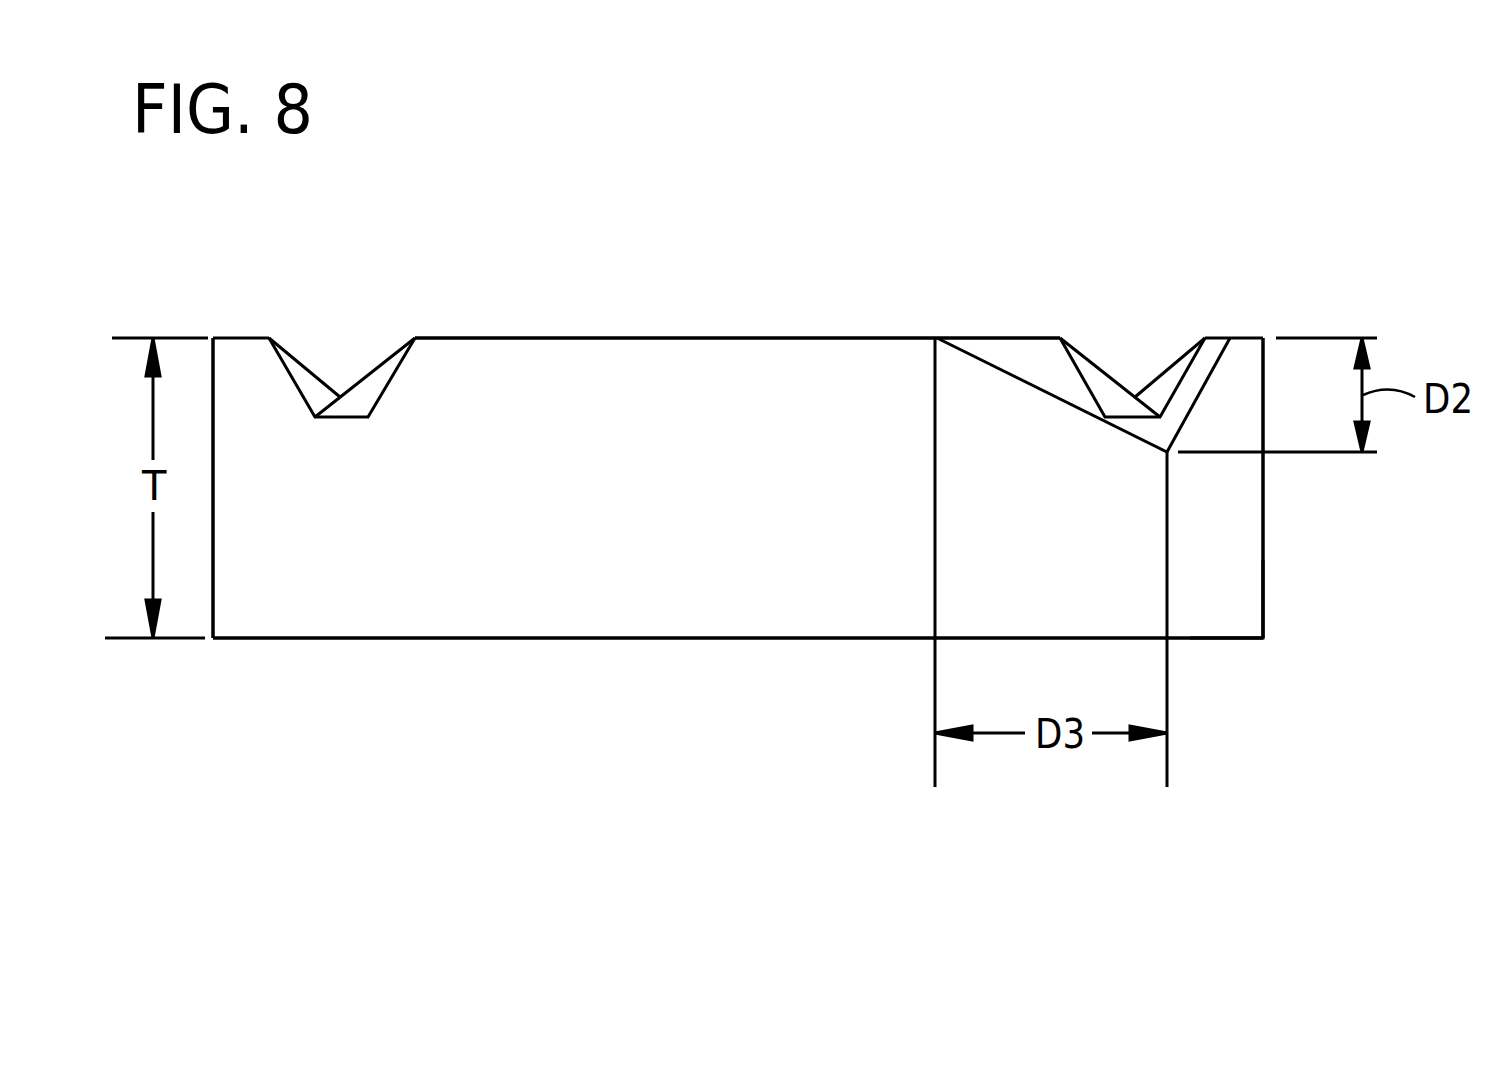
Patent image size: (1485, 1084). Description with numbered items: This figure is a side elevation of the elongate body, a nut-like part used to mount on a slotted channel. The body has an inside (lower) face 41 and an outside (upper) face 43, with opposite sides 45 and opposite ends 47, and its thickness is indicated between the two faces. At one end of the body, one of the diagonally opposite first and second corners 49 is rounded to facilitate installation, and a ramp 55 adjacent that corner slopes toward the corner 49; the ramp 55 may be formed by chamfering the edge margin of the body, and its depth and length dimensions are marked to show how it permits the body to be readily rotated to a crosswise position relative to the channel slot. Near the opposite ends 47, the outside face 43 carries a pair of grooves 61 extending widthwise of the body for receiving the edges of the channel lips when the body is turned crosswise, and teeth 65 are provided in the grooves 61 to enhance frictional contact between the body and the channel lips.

The inside face 41 is at (343, 638).
The outside face 43 is at (507, 337).
The opposite sides 45 is at (555, 593).
The opposite ends 47 is at (214, 548).
The first and second corners 49 is at (1227, 608).
The ramps 55 is at (1003, 353).
The grooves 61 is at (350, 366).
The teeth 65 is at (378, 370).